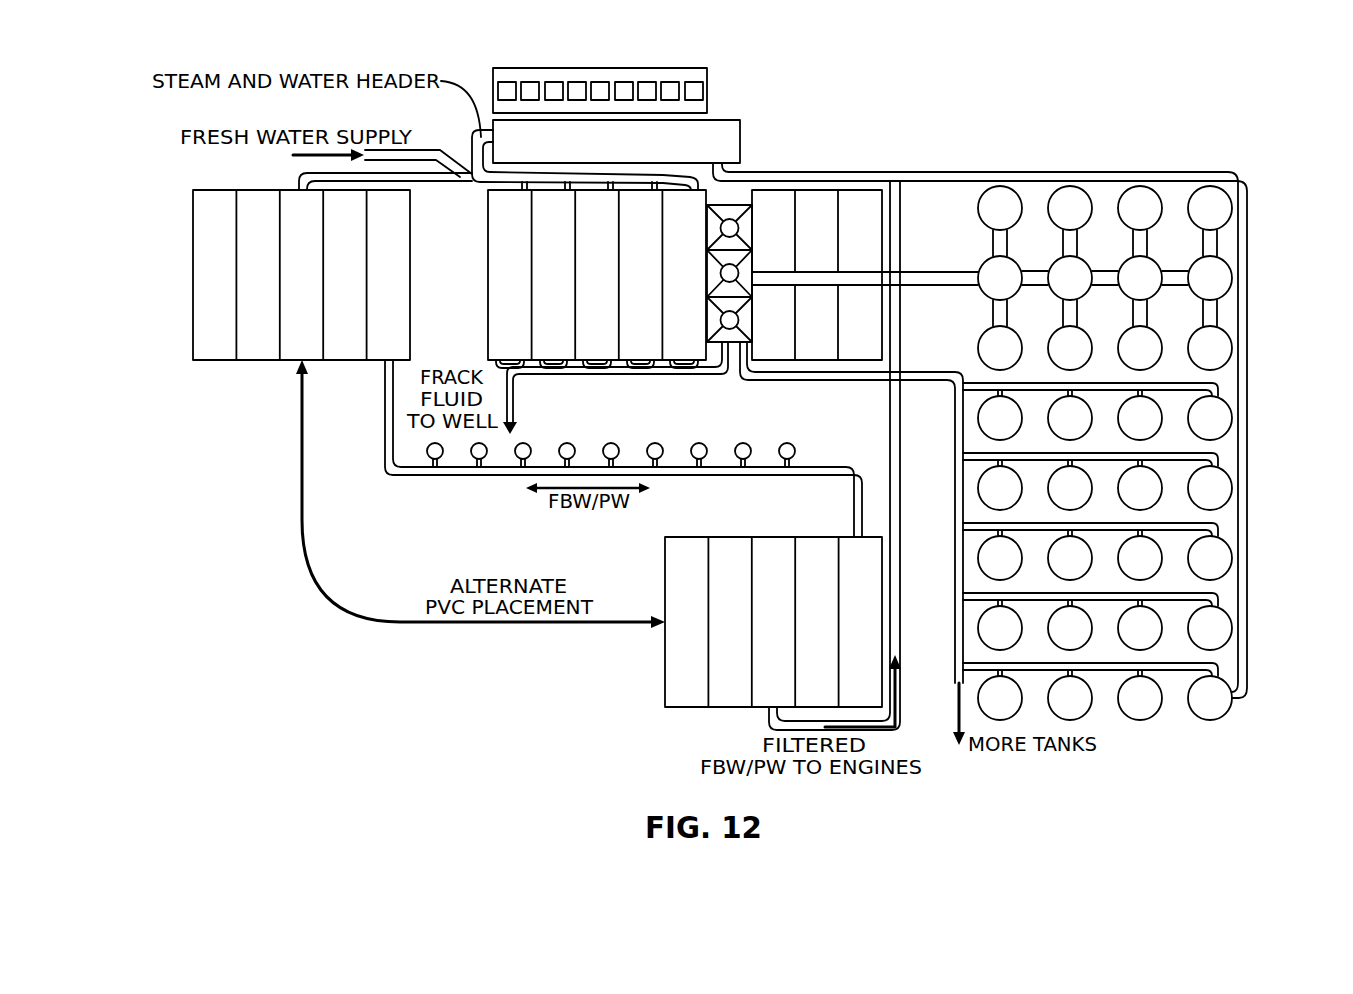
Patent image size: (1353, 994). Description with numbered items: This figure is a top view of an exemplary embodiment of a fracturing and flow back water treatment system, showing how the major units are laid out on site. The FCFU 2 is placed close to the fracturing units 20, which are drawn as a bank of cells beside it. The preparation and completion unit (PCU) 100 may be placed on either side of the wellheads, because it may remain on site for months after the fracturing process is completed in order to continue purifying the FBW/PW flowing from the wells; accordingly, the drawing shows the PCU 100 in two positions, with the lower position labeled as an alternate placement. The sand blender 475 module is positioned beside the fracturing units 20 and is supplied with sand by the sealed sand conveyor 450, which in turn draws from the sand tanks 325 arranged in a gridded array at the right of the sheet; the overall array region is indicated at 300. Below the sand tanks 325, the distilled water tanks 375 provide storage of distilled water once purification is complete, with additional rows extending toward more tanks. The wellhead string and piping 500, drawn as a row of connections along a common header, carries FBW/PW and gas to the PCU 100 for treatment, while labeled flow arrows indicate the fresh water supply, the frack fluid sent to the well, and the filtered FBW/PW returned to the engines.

The FCFU 2 is at (713, 150).
The fracturing units 20 is at (490, 272).
The preparation and completion unit 100 is at (205, 268).
The tank array 300 is at (1135, 430).
The sand tanks 325 is at (1217, 222).
The distilled water tanks 375 is at (1217, 432).
The sealed sand conveyor 450 is at (905, 277).
The sand blender 475 is at (728, 345).
The wellhead string and piping 500 is at (527, 445).